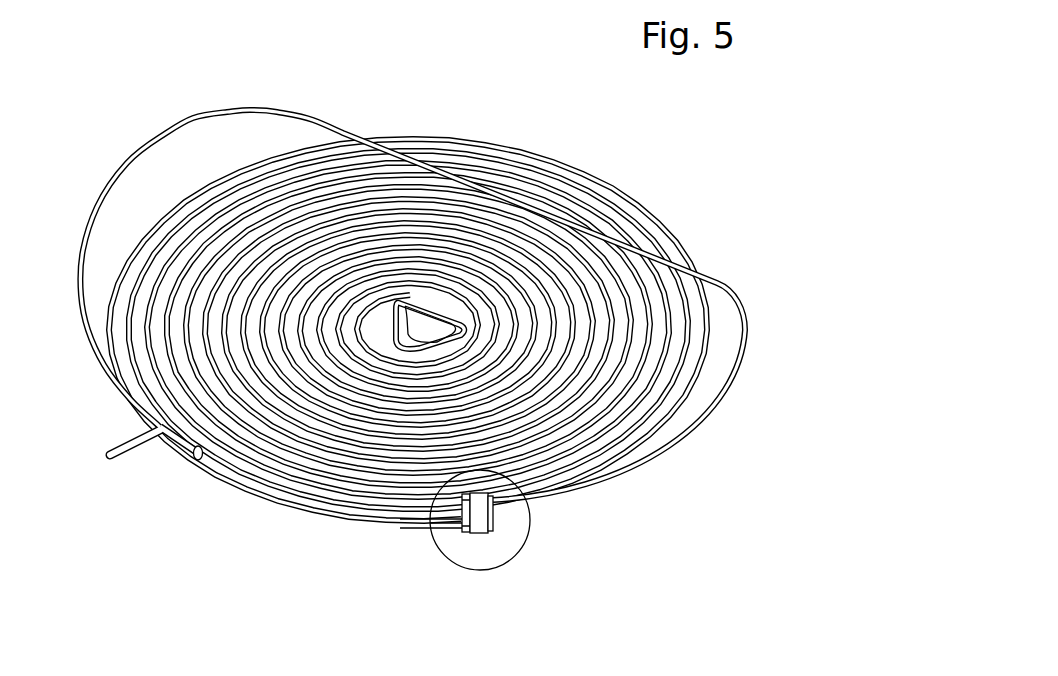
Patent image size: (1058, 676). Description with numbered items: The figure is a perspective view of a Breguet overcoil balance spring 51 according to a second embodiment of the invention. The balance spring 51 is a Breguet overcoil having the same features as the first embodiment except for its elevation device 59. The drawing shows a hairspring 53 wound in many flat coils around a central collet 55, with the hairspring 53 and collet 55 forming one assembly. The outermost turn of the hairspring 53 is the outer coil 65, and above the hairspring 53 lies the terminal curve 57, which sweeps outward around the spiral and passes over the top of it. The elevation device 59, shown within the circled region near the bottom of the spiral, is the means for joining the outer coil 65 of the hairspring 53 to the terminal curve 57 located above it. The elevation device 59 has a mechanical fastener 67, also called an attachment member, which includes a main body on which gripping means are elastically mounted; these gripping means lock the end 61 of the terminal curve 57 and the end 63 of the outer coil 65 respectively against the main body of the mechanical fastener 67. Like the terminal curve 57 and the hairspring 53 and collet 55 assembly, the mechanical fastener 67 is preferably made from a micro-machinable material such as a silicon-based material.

The Breguet overcoil balance spring 51 is at (412, 349).
The hairspring 53 is at (692, 257).
The collet 55 is at (425, 310).
The terminal curve 57 is at (248, 113).
The elevation device 59 is at (520, 570).
The end 61 is at (564, 492).
The end 63 is at (438, 533).
The outer coil 65 is at (216, 479).
The mechanical fastener 67 is at (477, 531).